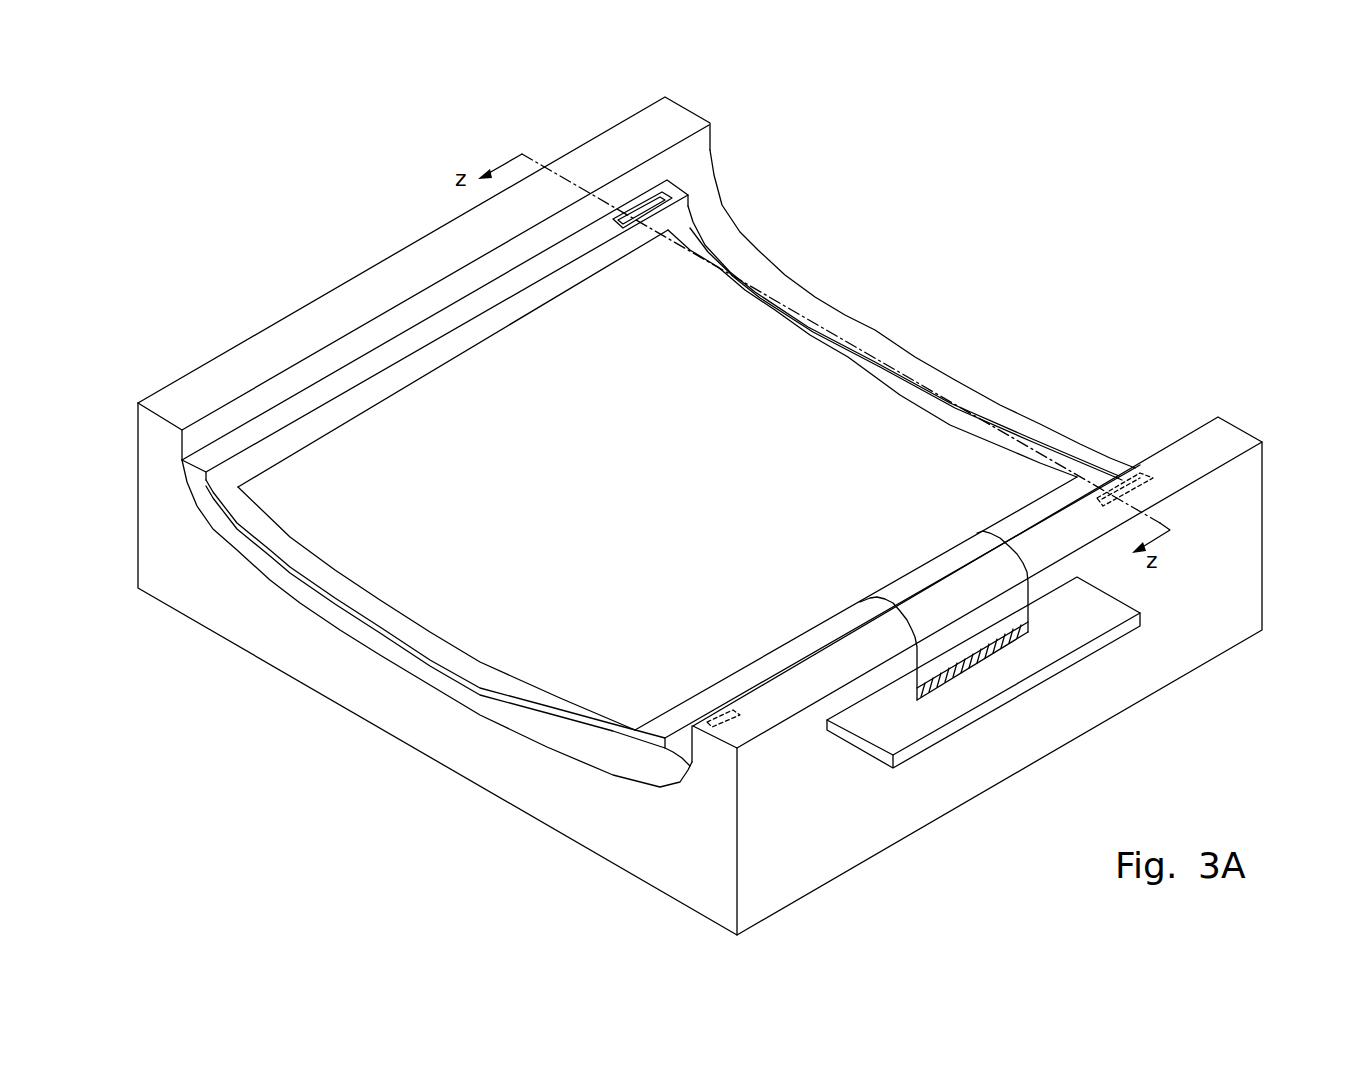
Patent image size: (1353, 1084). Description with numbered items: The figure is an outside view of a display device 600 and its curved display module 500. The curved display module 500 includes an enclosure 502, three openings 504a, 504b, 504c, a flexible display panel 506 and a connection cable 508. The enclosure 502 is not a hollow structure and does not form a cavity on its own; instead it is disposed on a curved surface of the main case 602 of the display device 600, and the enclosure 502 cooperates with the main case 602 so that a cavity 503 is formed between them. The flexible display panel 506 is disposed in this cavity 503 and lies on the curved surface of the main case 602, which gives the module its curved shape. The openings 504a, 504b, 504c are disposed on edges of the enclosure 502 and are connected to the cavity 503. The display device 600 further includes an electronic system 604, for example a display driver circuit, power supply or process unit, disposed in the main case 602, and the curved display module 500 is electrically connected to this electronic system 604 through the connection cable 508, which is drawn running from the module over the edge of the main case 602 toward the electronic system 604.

The curved display module 500 is at (650, 452).
The enclosure 502 is at (277, 552).
The cavity 503 is at (337, 617).
The opening 504a is at (636, 207).
The opening 504b is at (1140, 480).
The opening 504c is at (722, 719).
The flexible display panel 506 is at (847, 363).
The connection cable 508 is at (1013, 543).
The display device 600 is at (121, 441).
The main case 602 is at (137, 528).
The electronic system 604 is at (1073, 632).